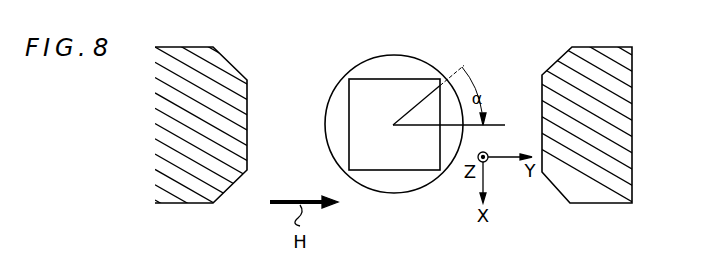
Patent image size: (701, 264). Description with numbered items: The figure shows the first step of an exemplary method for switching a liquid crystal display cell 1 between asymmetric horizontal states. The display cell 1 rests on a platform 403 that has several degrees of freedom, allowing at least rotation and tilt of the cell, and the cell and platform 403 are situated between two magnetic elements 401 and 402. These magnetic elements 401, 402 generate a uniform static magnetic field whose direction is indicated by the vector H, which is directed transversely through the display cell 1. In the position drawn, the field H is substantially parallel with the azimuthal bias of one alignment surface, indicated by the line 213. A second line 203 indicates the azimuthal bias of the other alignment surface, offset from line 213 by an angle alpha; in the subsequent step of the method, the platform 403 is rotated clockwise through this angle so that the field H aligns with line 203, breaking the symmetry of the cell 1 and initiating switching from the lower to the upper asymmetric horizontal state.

The magnetic element 401 is at (165, 115).
The magnetic element 402 is at (627, 133).
The platform 403 is at (393, 58).
The liquid crystal display cell 1 is at (358, 113).
The line 203 is at (469, 62).
The line 213 is at (498, 125).